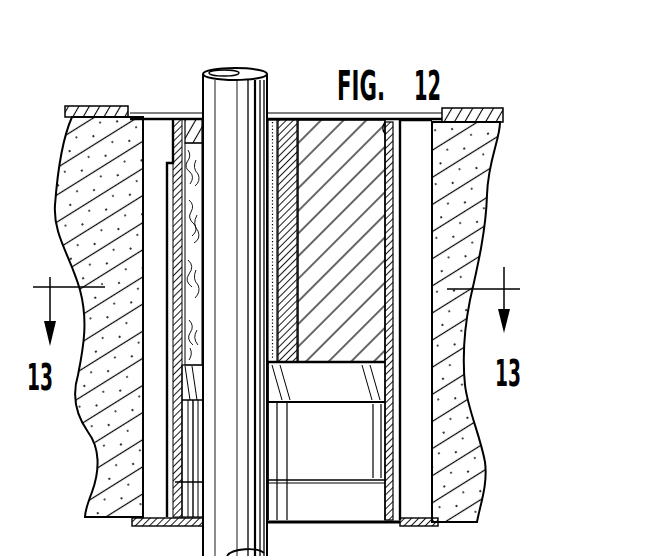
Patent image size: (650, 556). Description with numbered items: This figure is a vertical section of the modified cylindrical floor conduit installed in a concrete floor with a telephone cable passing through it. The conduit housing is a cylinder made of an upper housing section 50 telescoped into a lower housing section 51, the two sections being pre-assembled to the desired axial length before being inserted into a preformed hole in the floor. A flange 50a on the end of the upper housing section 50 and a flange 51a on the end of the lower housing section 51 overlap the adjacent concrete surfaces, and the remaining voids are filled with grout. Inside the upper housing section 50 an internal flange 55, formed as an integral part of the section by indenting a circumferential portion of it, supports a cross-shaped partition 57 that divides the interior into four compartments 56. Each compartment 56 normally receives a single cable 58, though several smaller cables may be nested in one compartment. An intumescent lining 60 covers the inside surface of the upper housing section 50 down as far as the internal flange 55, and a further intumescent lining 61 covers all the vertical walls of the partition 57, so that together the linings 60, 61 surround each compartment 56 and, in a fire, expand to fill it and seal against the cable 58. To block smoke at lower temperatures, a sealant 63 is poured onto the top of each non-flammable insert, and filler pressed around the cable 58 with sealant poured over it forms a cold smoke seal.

The upper housing section 50 is at (405, 137).
The flange 50a is at (143, 118).
The lower housing section 51 is at (408, 242).
The flange 51a is at (143, 527).
The internal flange 55 is at (395, 385).
The compartment 56 is at (326, 132).
The cross-shaped partition 57 is at (290, 157).
The cable 58 is at (203, 91).
The intumescent lining 60 is at (384, 124).
The intumescent lining 61 is at (298, 203).
The sealant 63 is at (200, 117).